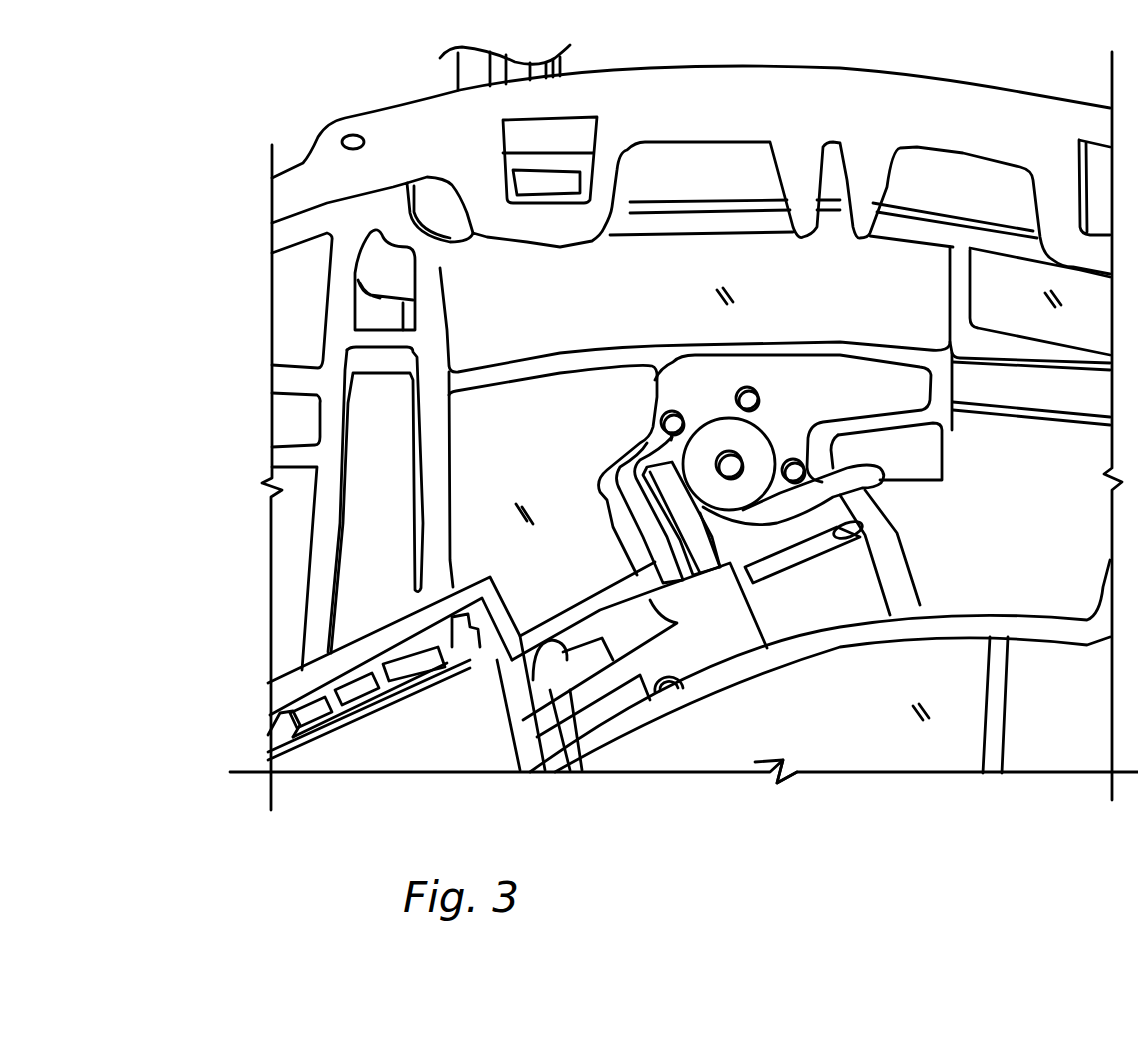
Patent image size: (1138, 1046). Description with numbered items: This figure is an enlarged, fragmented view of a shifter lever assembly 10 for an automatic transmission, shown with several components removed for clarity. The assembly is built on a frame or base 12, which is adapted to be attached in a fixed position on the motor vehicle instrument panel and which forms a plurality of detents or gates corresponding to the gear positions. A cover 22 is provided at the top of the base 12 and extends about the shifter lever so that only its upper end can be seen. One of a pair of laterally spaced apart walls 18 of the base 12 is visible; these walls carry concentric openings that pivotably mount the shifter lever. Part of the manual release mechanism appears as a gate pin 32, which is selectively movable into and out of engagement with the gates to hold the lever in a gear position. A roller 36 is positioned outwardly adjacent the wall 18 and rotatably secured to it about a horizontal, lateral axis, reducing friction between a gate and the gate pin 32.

The shifter lever assembly 10 is at (657, 824).
The base 12 is at (850, 762).
The wall 18 is at (755, 760).
The cover 22 is at (773, 68).
The gate pin 32 is at (660, 517).
The roller 36 is at (766, 446).